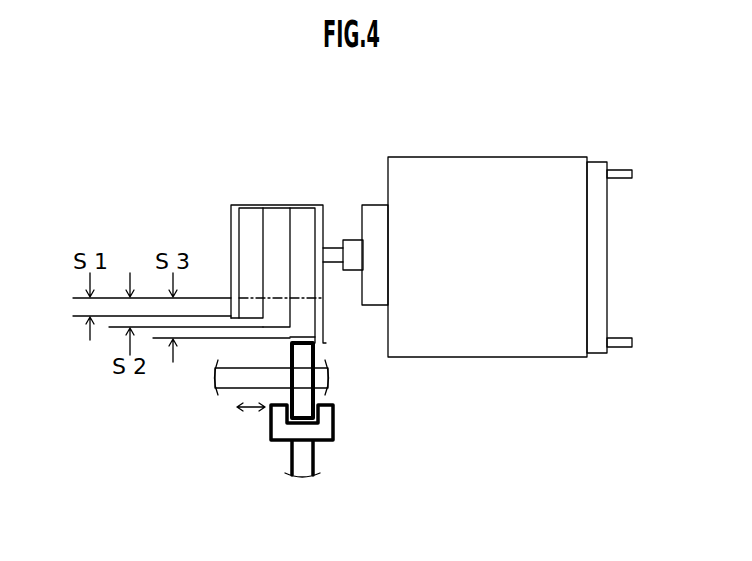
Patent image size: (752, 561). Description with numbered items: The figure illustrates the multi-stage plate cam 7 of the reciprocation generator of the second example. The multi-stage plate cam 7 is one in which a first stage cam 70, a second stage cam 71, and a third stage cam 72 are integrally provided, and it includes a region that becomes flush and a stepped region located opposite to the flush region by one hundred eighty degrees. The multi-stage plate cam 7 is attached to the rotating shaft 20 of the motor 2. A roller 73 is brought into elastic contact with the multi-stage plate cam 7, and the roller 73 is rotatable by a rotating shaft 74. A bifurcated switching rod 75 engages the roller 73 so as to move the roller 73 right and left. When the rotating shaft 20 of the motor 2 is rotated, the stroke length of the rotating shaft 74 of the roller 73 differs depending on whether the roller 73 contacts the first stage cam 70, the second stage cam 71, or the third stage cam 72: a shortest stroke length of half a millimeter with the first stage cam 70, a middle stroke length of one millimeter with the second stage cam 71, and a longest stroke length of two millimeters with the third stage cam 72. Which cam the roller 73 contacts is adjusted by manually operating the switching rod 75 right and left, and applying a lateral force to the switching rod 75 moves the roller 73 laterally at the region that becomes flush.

The motor 2 is at (490, 185).
The multi-stage plate cam 7 is at (275, 227).
The rotating shaft 20 is at (335, 245).
The first stage cam 70 is at (290, 346).
The second stage cam 71 is at (268, 328).
The third stage cam 72 is at (245, 320).
The roller 73 is at (320, 443).
The rotating shaft 74 is at (328, 380).
The switching rod 75 is at (330, 420).